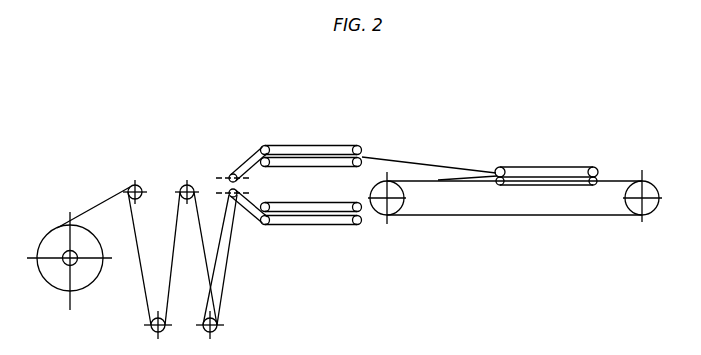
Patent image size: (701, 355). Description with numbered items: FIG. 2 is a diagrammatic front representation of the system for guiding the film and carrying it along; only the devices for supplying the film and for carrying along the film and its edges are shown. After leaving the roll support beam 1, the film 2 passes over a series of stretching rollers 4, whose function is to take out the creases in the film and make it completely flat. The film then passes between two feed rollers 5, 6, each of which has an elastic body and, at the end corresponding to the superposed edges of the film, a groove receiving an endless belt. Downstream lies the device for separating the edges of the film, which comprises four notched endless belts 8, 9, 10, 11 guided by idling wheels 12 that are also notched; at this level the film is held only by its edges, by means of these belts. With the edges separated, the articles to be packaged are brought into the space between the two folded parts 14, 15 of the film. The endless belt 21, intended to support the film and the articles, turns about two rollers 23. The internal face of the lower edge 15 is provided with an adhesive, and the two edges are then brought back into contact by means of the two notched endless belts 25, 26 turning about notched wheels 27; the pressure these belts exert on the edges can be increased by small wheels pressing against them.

The roll support beam 1 is at (69, 268).
The film 2 is at (93, 201).
The stretching rollers 4 is at (180, 263).
The feed roller 5 is at (240, 164).
The feed roller 6 is at (242, 209).
The notched endless belt 8 is at (311, 135).
The notched endless belt 9 is at (311, 173).
The notched endless belt 10 is at (311, 200).
The notched endless belt 11 is at (311, 238).
The idling wheels 12 is at (308, 187).
The folded part of the film 14 is at (429, 157).
The lower edge of the film 15 is at (467, 161).
The endless belt 21 is at (514, 214).
The rollers 23 is at (517, 208).
The notched endless belt 25 is at (546, 163).
The notched endless belt 26 is at (546, 198).
The notched wheels 27 is at (548, 175).